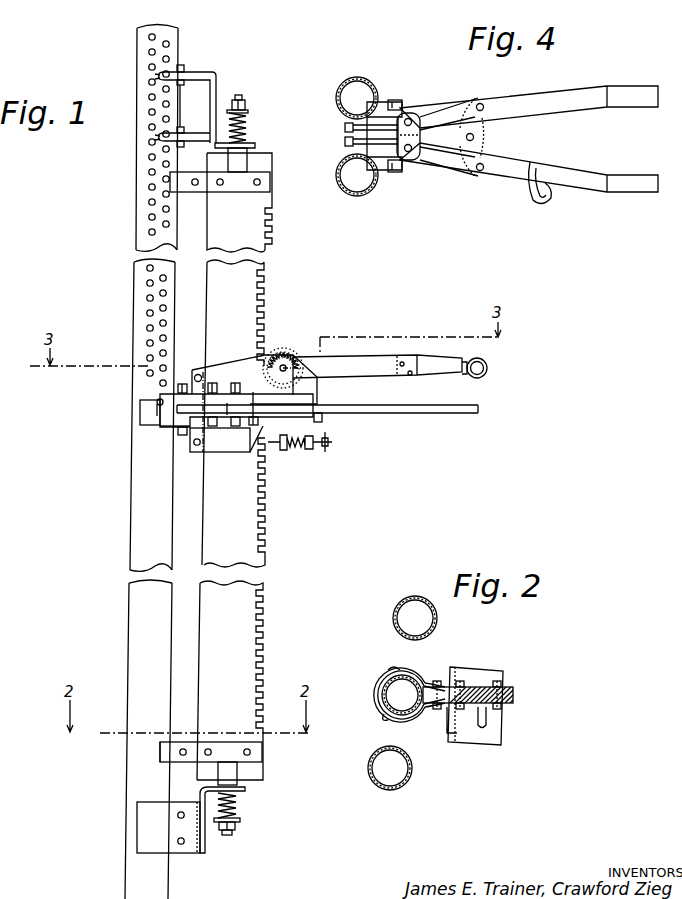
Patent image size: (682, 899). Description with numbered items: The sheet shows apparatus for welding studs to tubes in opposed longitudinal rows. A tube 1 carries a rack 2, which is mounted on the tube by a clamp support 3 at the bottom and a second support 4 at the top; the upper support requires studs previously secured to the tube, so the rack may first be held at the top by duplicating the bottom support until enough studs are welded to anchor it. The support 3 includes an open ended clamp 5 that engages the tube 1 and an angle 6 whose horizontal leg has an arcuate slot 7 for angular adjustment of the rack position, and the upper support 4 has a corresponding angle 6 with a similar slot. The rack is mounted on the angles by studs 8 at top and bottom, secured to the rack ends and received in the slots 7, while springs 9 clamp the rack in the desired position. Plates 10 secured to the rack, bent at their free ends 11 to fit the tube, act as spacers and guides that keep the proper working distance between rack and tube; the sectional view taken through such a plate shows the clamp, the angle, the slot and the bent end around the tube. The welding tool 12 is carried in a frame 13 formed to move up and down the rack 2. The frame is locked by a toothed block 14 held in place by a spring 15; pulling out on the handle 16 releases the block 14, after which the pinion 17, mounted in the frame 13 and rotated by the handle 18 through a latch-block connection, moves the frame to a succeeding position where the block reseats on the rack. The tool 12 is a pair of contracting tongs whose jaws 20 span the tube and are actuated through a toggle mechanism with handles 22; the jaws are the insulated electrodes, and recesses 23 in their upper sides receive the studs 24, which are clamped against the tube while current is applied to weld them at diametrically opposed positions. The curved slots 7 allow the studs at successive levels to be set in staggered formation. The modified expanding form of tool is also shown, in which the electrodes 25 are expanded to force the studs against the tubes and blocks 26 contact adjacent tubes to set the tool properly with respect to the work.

In FIG. 1, the tube 1 is at (136, 160).
In FIG. 2, the tube 1 is at (383, 681).
In FIG. 1, the rack 2 is at (270, 296).
In FIG. 1, the clamp support 3 is at (205, 850).
In FIG. 1, the second support 4 is at (218, 86).
In FIG. 1, the open ended clamp 5 is at (190, 855).
In FIG. 2, the open ended clamp 5 is at (385, 716).
In FIG. 1, the angle 6 is at (252, 146).
In FIG. 2, the angle 6 is at (480, 746).
In FIG. 2, the arcuate slot 7 is at (490, 721).
In FIG. 1, the stud 8 is at (240, 100).
In FIG. 1, the spring 9 is at (246, 128).
In FIG. 1, the plate 10 is at (270, 184).
In FIG. 2, the plate 10 is at (480, 690).
In FIG. 1, the bent free end 11 is at (160, 750).
In FIG. 2, the bent free end 11 is at (428, 676).
In FIG. 1, the welding tool 12 is at (140, 408).
In FIG. 1, the frame 13 is at (217, 368).
In FIG. 1, the toothed block 14 is at (270, 446).
In FIG. 1, the spring 15 is at (300, 448).
In FIG. 1, the handle 16 is at (328, 456).
In FIG. 1, the pinion 17 is at (283, 354).
In FIG. 1, the handle 18 is at (395, 378).
In FIG. 1, the jaws 20 is at (157, 425).
In FIG. 1, the handles 22 is at (455, 417).
In FIG. 1, the recess 23 is at (157, 411).
In FIG. 1, the stud 24 is at (160, 400).
In FIG. 4, the electrode 25 is at (345, 142).
In FIG. 4, the block 26 is at (396, 102).